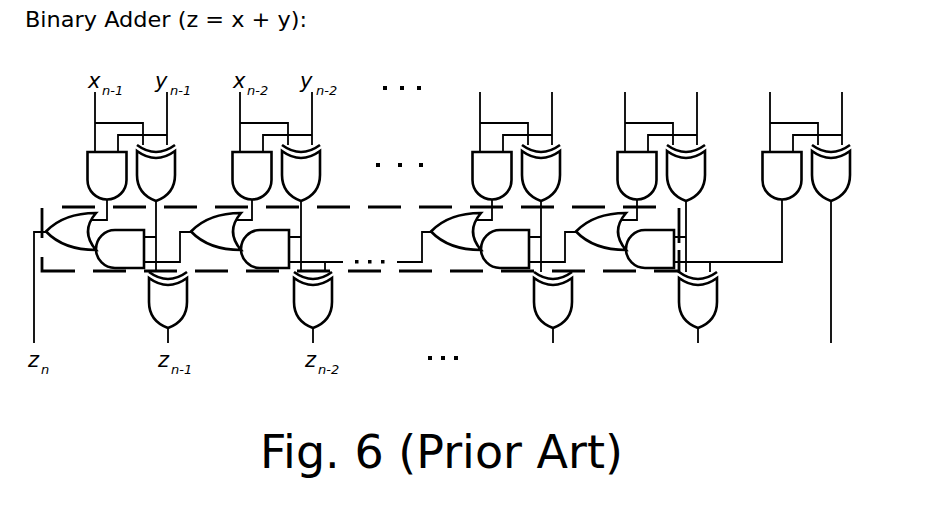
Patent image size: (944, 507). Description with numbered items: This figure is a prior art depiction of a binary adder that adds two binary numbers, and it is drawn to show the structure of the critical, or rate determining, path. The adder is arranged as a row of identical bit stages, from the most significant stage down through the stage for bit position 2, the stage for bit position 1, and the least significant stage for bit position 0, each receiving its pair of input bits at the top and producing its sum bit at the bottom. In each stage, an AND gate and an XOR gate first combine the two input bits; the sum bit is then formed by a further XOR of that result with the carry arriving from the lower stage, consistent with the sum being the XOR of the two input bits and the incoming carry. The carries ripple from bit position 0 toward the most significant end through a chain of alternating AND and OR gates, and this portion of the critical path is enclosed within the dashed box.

The bit-2 adder stage (AND/XOR gates with carry logic for x2, y2, z2) 2 is at (503, 223).
The bit-1 adder stage (AND/XOR gates with carry logic for x1, y1, z1) 1 is at (679, 223).
The bit-0 half-adder stage (AND/XOR gates for x0, y0, z0) 0 is at (810, 223).